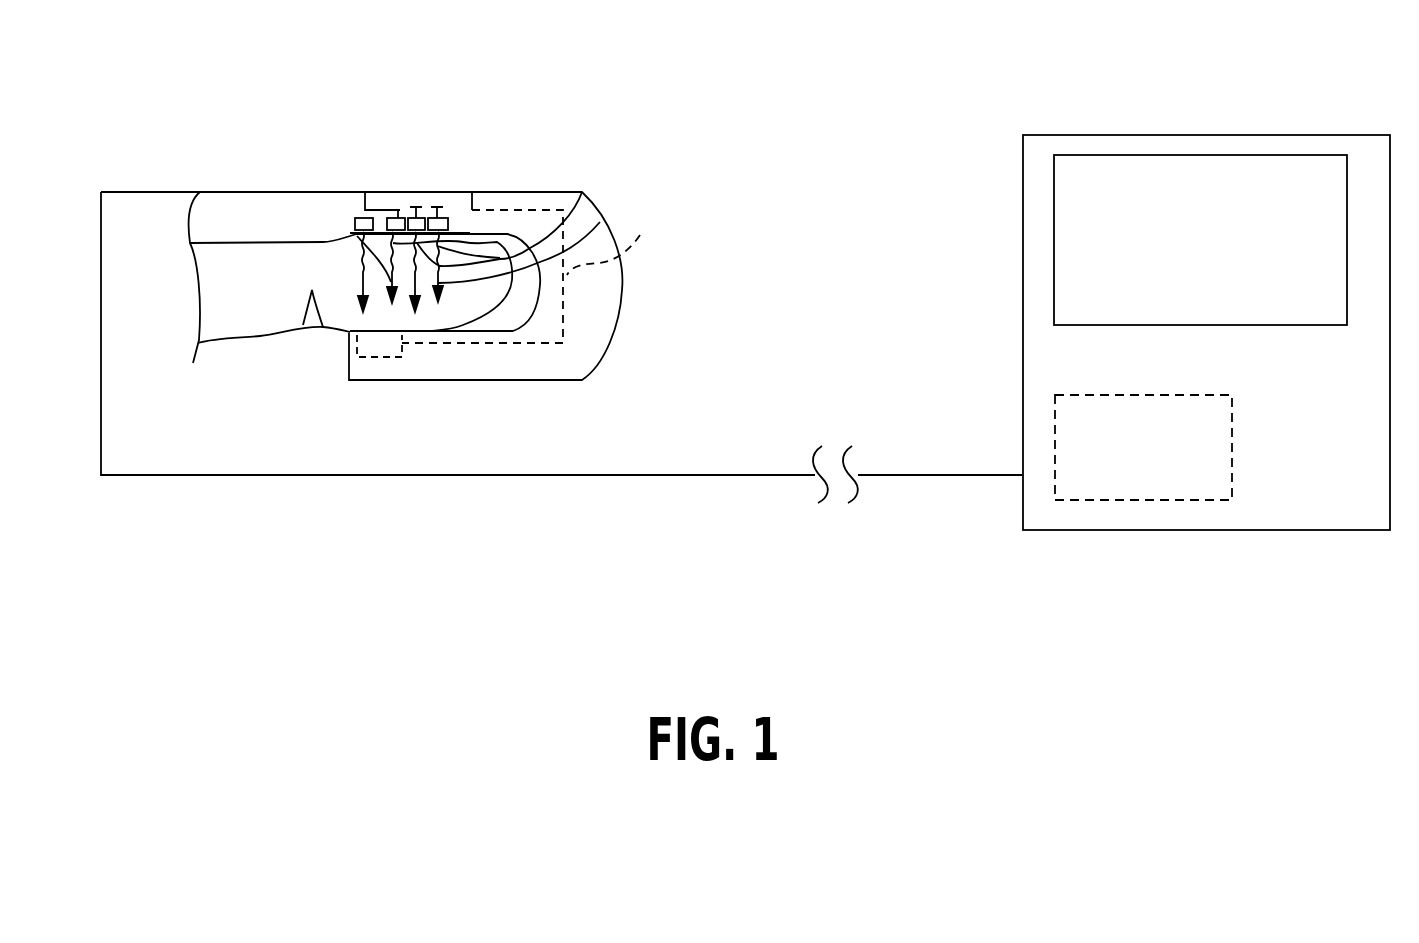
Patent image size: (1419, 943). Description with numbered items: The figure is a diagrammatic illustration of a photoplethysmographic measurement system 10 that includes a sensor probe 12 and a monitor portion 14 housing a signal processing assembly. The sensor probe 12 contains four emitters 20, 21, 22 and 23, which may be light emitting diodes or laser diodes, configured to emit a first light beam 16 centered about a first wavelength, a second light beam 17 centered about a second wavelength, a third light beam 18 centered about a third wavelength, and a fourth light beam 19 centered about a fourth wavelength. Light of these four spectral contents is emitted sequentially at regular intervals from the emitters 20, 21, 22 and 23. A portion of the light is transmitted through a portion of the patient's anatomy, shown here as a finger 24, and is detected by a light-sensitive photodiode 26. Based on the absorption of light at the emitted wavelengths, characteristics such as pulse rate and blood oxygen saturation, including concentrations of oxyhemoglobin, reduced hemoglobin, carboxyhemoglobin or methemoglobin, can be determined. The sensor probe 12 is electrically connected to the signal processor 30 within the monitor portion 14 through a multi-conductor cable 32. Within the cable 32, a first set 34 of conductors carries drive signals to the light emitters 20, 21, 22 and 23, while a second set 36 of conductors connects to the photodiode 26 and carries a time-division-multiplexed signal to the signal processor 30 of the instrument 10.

The photoplethysmographic measurement system 10 is at (975, 100).
The sensor probe 12 is at (622, 288).
The monitor portion 14 is at (1022, 320).
The first light beam 16 is at (357, 236).
The second light beam 17 is at (352, 232).
The third light beam 18 is at (582, 192).
The fourth light beam 19 is at (600, 222).
The emitter 20 is at (353, 218).
The emitter 21 is at (382, 210).
The emitter 22 is at (419, 212).
The emitter 23 is at (447, 215).
The finger 24 is at (230, 340).
The light-sensitive photodiode 26 is at (378, 357).
The signal processor 30 is at (1125, 500).
The multi-conductor cable 32 is at (101, 382).
The first set of conductors 34 is at (397, 208).
The second set of conductors 36 is at (615, 239).